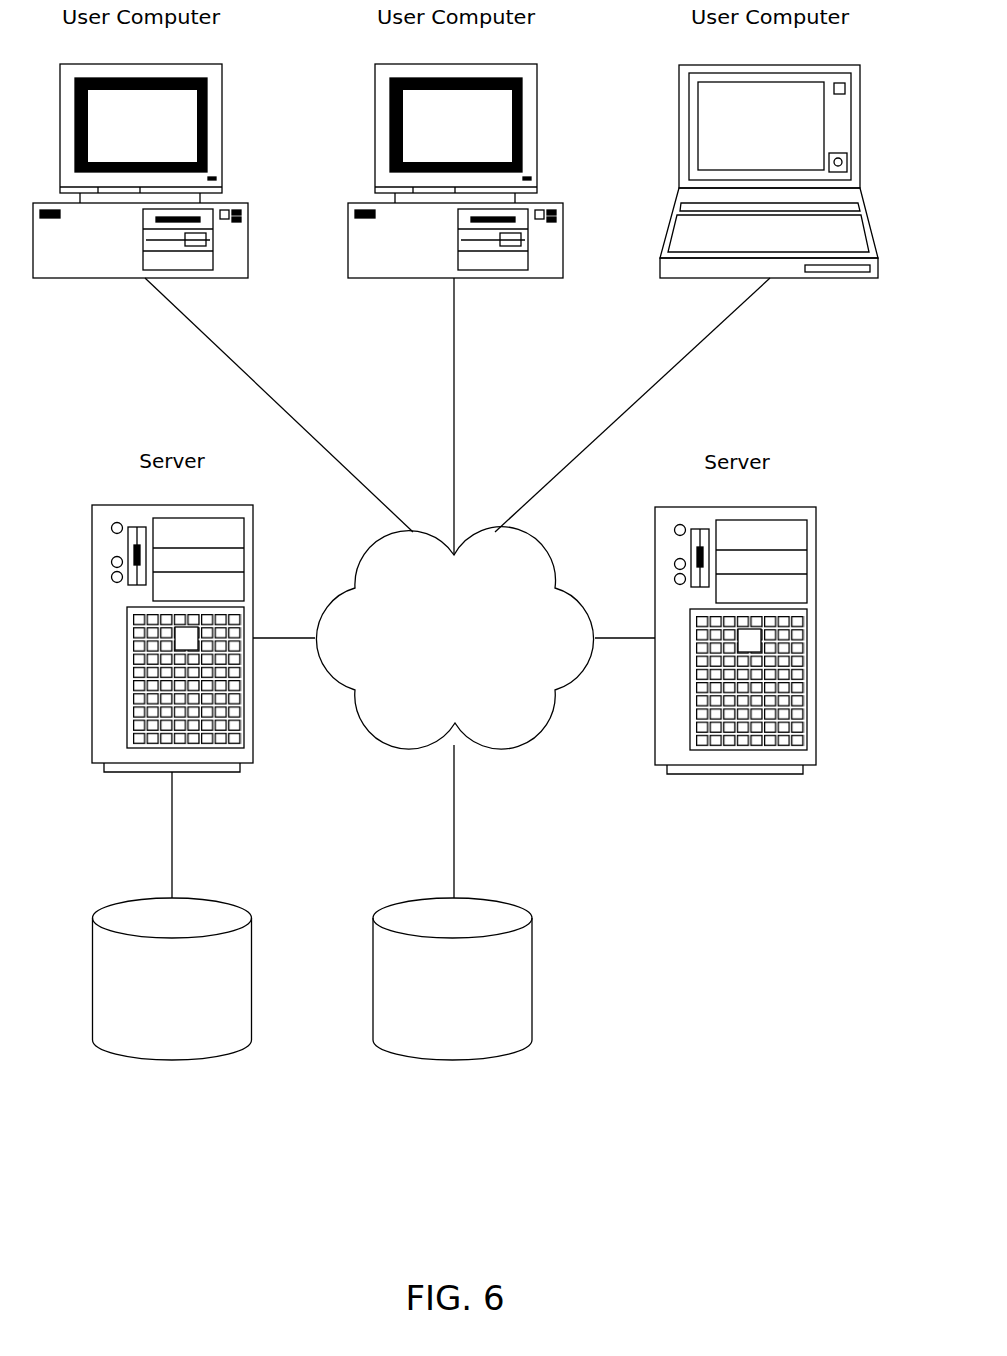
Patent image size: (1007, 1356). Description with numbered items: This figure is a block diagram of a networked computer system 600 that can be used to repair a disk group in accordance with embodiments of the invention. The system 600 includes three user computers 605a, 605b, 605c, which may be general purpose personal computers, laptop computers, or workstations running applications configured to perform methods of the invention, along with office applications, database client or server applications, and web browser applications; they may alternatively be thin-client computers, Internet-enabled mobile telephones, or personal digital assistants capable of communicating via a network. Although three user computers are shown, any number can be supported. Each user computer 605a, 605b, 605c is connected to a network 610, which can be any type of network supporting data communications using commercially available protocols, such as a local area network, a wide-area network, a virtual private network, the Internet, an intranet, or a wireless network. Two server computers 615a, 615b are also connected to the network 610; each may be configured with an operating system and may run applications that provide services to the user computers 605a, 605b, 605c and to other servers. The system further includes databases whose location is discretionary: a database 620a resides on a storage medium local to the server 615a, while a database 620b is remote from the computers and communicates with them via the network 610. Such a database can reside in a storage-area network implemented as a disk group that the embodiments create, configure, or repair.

The system 600 is at (725, 1124).
The user computer 605a is at (248, 222).
The user computer 605b is at (347, 223).
The user computer 605c is at (679, 172).
The network 610 is at (493, 745).
The server computer 615a is at (92, 638).
The server computer 615b is at (818, 640).
The database 620a is at (172, 1060).
The database 620b is at (452, 1060).